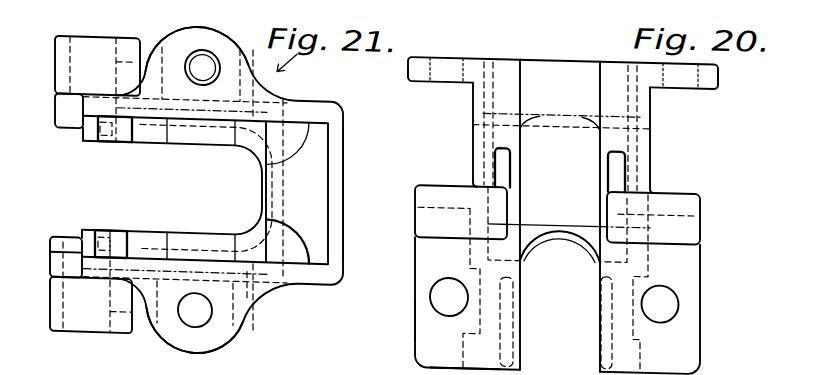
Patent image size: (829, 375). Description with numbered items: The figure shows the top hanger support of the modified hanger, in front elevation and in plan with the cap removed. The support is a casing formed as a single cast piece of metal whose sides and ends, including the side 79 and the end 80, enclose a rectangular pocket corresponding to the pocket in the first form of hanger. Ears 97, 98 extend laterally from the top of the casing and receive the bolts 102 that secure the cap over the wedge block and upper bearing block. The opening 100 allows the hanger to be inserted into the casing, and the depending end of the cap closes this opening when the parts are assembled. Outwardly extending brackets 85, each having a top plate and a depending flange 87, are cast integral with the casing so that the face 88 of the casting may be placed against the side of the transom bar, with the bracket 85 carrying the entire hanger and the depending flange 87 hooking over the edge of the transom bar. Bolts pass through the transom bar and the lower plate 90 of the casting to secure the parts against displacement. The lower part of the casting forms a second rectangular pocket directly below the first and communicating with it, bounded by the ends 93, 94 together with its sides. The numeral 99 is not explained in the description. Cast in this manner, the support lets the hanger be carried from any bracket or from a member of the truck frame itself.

In FIG. 21, the side of casing 79 is at (322, 102).
In FIG. 20, the end of casing 80 is at (547, 69).
In FIG. 21, the outwardly extending bracket 85 is at (74, 183).
In FIG. 20, the outwardly extending bracket 85 is at (578, 282).
In FIG. 20, the depending flange 87 is at (425, 223).
In FIG. 20, the face of casting 88 is at (552, 317).
In FIG. 20, the lower plate 90 is at (417, 318).
In FIG. 21, the end of lower pocket 93 is at (333, 177).
In FIG. 20, the end of lower pocket 94 is at (593, 176).
In FIG. 21, the ear 97 is at (182, 29).
In FIG. 20, the ear 97 is at (422, 77).
In FIG. 21, the ear 98 is at (227, 325).
In FIG. 20, the ear 98 is at (720, 70).
In FIG. 21, the hole 99 is at (170, 347).
In FIG. 21, the opening 100 is at (123, 106).
In FIG. 20, the bolts 102 is at (438, 364).